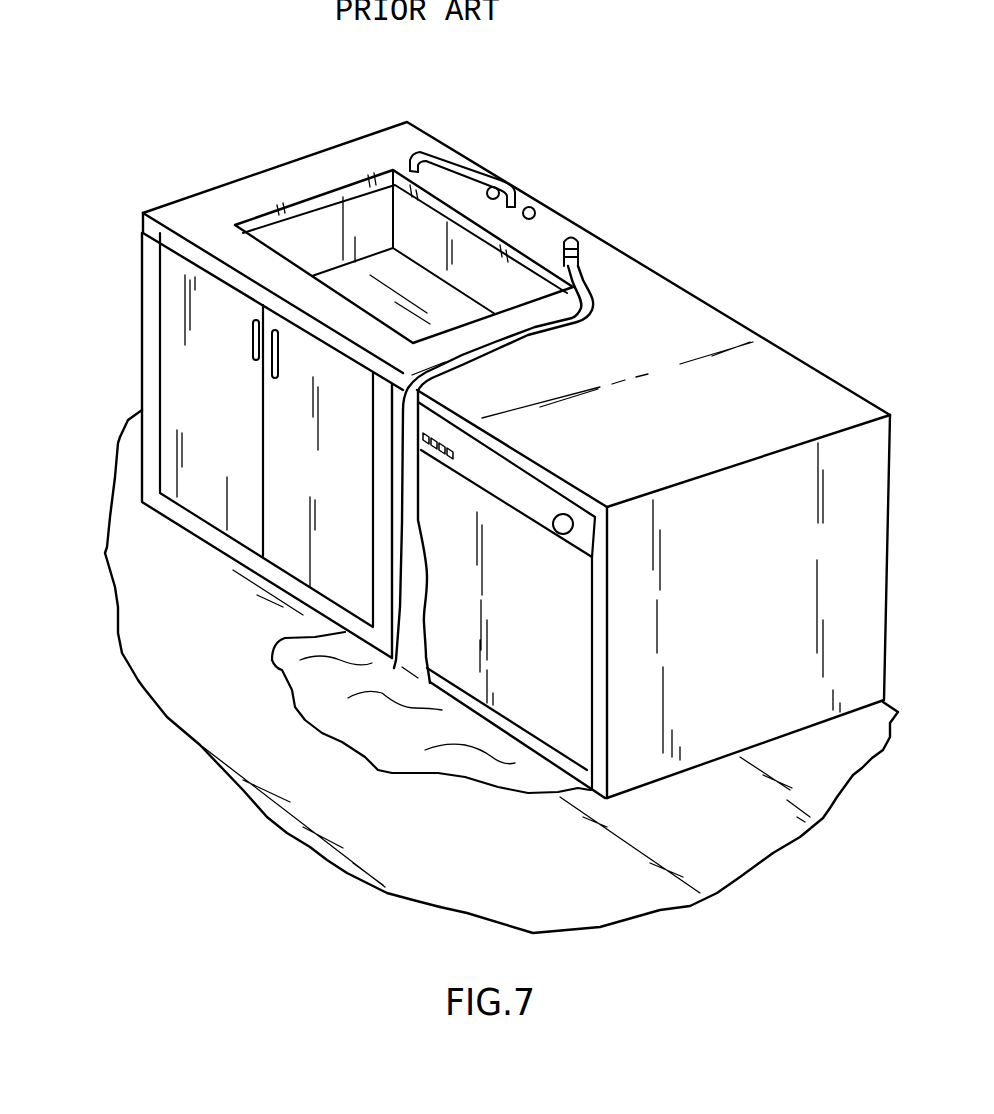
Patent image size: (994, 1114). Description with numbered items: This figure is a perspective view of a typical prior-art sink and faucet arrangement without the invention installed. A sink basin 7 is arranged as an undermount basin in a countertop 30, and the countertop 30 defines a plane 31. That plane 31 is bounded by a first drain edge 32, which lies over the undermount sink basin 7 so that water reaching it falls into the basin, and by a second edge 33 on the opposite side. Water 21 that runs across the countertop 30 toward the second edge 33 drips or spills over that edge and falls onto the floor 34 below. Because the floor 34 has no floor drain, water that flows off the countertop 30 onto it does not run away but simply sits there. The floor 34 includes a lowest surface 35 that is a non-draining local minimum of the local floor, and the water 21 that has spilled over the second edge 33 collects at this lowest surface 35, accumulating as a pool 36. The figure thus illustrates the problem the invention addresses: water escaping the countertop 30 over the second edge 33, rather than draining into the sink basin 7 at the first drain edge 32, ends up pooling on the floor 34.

The sink basin 7 is at (483, 285).
The water 21 is at (595, 313).
The countertop 30 is at (710, 421).
The plane 31 is at (812, 370).
The first drain edge 32 is at (352, 183).
The second edge 33 is at (325, 330).
The floor 34 is at (237, 692).
The lowest surface 35 is at (373, 762).
The pool 36 is at (473, 739).